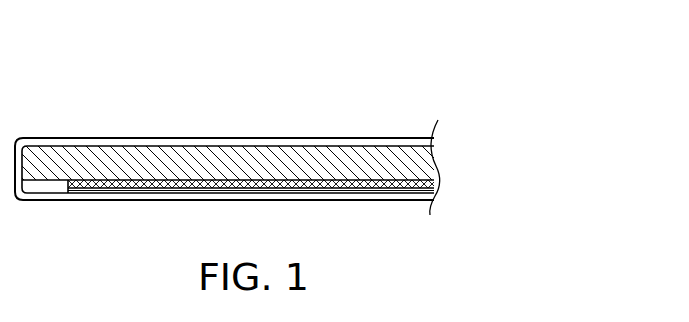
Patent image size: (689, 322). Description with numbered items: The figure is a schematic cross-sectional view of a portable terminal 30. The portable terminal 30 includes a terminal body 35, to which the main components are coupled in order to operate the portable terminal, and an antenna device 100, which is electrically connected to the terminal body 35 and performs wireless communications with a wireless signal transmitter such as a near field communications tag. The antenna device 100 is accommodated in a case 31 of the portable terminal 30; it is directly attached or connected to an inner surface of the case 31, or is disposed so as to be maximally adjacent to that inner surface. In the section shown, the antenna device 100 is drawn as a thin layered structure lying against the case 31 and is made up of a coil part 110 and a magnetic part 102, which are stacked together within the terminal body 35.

The portable terminal 30 is at (271, 40).
The case 31 is at (258, 138).
The terminal body 35 is at (348, 150).
The antenna device 100 is at (537, 142).
The magnetic part 102 is at (442, 184).
The coil part 110 is at (442, 191).